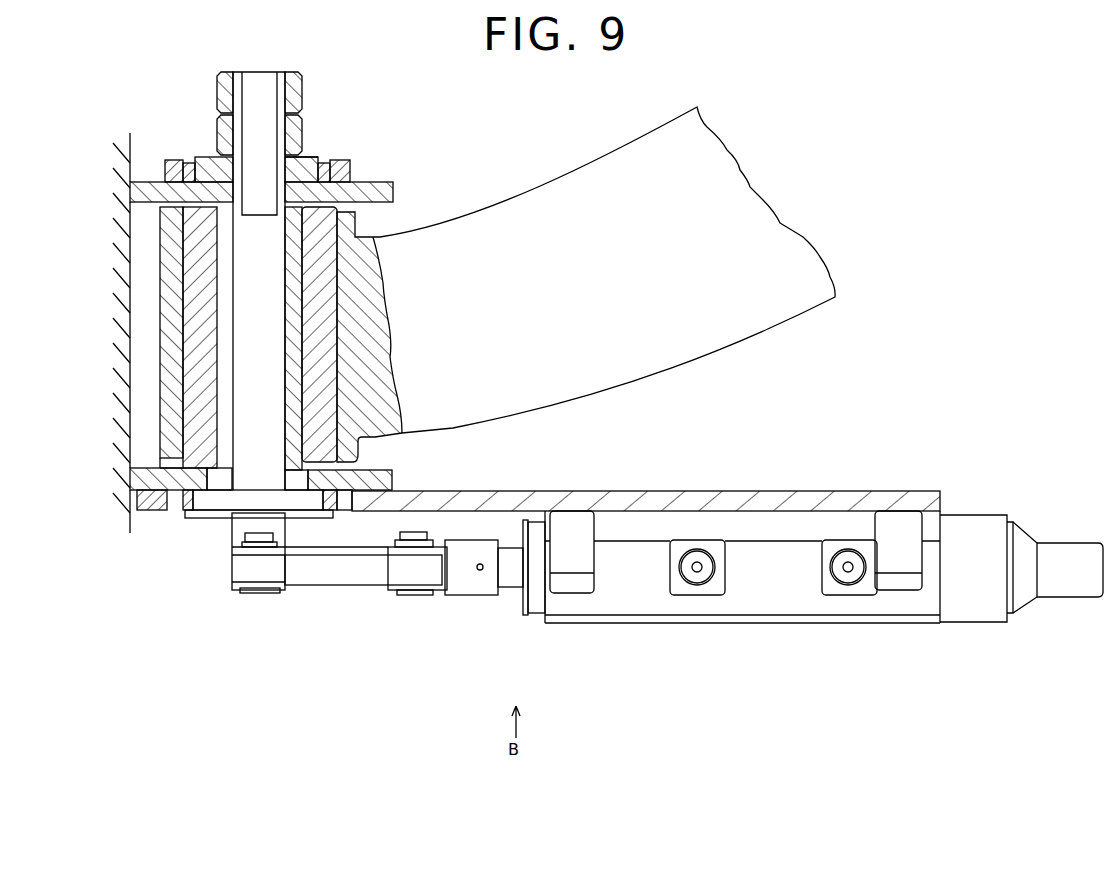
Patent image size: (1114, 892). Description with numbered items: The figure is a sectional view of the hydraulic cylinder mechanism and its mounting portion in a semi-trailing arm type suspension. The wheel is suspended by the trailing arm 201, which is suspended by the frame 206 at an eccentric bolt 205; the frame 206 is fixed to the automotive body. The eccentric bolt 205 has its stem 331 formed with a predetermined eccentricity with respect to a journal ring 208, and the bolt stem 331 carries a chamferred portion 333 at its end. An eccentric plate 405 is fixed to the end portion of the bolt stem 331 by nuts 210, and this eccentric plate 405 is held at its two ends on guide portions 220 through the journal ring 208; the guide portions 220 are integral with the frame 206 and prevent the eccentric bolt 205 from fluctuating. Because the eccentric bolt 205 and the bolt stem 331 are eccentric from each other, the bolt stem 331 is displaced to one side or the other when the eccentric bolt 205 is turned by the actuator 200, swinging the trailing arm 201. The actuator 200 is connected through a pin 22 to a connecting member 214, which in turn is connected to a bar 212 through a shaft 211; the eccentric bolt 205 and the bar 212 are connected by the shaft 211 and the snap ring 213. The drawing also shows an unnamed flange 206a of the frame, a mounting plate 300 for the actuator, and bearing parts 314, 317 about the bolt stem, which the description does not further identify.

The actuator 200 is at (506, 630).
The trailing arm 201 is at (797, 302).
The eccentric bolt 205 is at (228, 542).
The frame 206 is at (124, 522).
The frame flange 206a is at (310, 482).
The journal ring 208 is at (330, 157).
The nuts 210 is at (300, 75).
The shaft 211 is at (255, 595).
The bar 212 is at (325, 573).
The snap ring 213 is at (267, 548).
The connecting member 214 is at (448, 592).
The pin 22 is at (479, 571).
The guide portions 220 is at (177, 163).
The bracket plate 300 is at (890, 505).
The bearing 314 is at (353, 233).
The spacer sleeve 317 is at (283, 424).
The bolt stem 331 is at (270, 354).
The chamferred portion 333 is at (270, 135).
The eccentric plate 405 is at (303, 162).